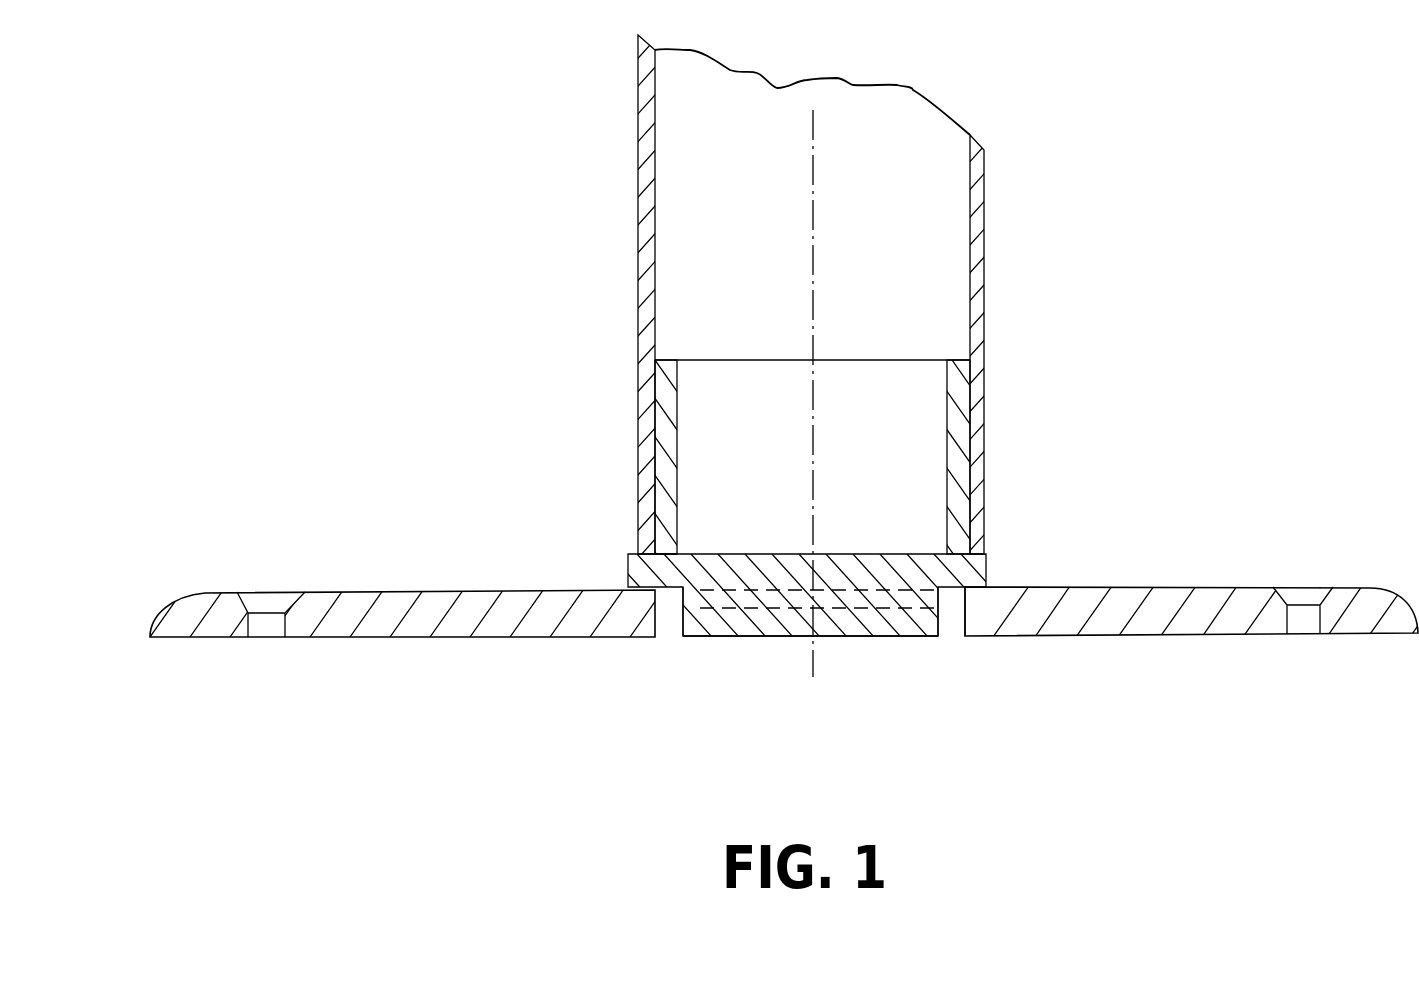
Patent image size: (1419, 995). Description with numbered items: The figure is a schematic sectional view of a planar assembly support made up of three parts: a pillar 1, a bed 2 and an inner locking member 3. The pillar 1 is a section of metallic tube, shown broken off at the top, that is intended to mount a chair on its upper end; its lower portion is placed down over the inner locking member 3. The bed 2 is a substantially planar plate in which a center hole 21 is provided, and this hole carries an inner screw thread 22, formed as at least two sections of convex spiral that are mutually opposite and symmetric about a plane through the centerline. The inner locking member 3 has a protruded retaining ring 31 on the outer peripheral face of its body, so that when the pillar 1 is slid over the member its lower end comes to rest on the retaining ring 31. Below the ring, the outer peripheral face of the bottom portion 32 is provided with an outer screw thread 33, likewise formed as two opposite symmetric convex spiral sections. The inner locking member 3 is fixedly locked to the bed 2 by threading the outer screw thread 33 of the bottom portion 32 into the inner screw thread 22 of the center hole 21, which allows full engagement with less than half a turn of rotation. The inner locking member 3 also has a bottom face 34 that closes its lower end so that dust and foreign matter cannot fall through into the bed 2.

The pillar 1 is at (980, 248).
The bed 2 is at (1187, 582).
The inner locking member 3 is at (948, 348).
The center hole 21 is at (955, 615).
The inner screw thread 22 is at (895, 608).
The retaining ring 31 is at (968, 570).
The bottom portion 32 is at (710, 622).
The outer screw thread 33 is at (770, 625).
The bottom face 34 is at (720, 558).